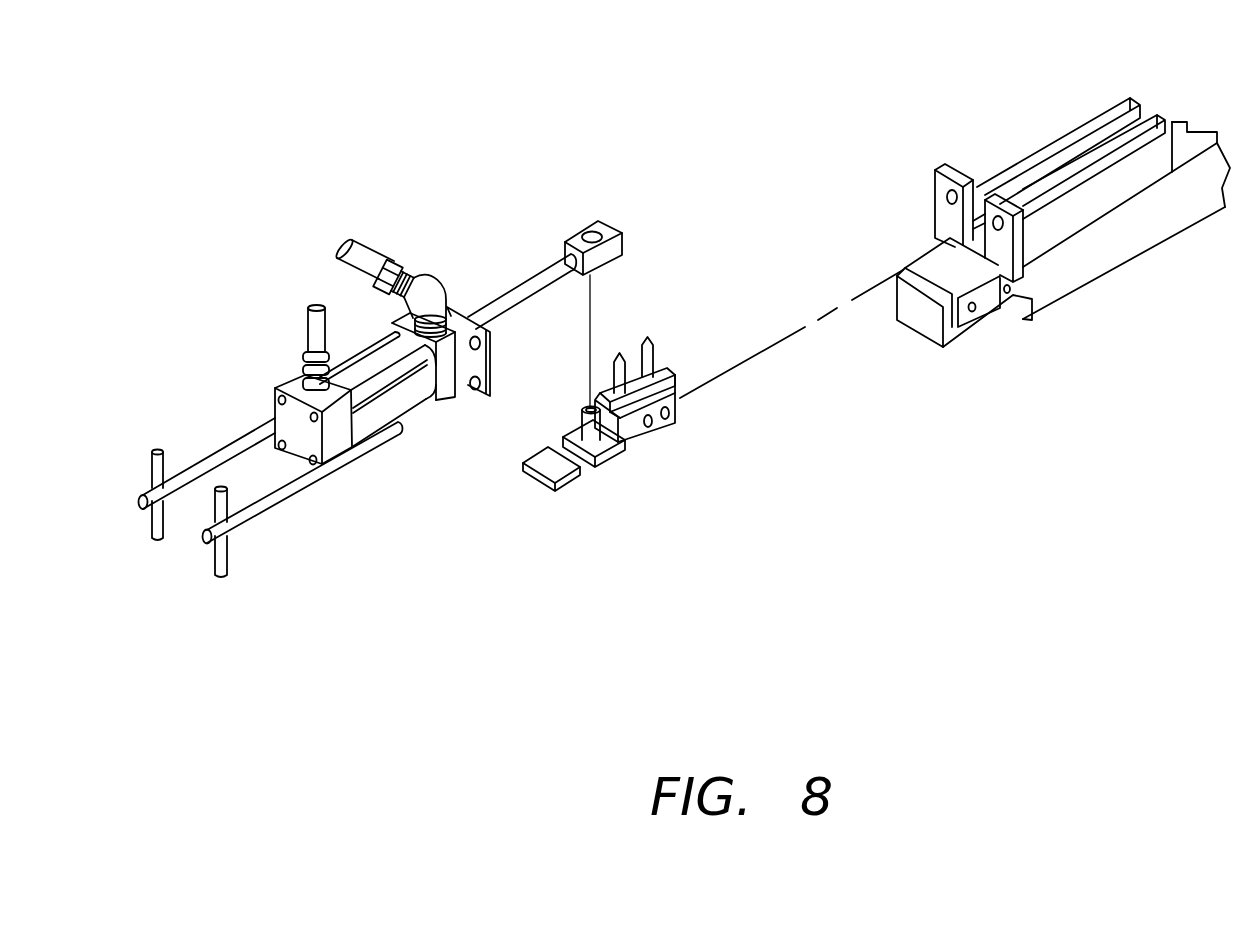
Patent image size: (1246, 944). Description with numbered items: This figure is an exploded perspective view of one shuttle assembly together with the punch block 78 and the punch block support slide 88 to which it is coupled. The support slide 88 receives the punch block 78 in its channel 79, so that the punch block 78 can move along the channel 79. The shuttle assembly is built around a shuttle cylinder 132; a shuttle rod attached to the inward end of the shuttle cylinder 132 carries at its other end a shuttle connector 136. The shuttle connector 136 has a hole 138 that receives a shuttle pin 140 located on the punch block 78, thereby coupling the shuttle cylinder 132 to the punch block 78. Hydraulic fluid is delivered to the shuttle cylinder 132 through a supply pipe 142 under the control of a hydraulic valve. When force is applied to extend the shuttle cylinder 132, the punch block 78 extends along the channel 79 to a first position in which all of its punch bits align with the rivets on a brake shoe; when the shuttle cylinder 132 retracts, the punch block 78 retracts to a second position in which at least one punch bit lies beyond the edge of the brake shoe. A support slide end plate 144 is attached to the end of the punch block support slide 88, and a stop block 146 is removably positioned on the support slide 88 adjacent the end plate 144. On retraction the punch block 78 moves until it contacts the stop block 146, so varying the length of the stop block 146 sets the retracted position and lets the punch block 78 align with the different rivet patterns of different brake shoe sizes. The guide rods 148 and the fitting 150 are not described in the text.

The punch block 78 is at (667, 430).
The channel 79 is at (978, 218).
The punch block support slide 88 is at (1127, 265).
The shuttle cylinder 132 is at (367, 340).
The shuttle connector 136 is at (573, 235).
The hole 138 is at (593, 235).
The shuttle pin 140 is at (610, 443).
The supply pipe 142 is at (373, 245).
The support slide end plate 144 is at (480, 403).
The stop block 146 is at (580, 478).
The guide rods 148 is at (279, 508).
The fitting 150 is at (305, 332).